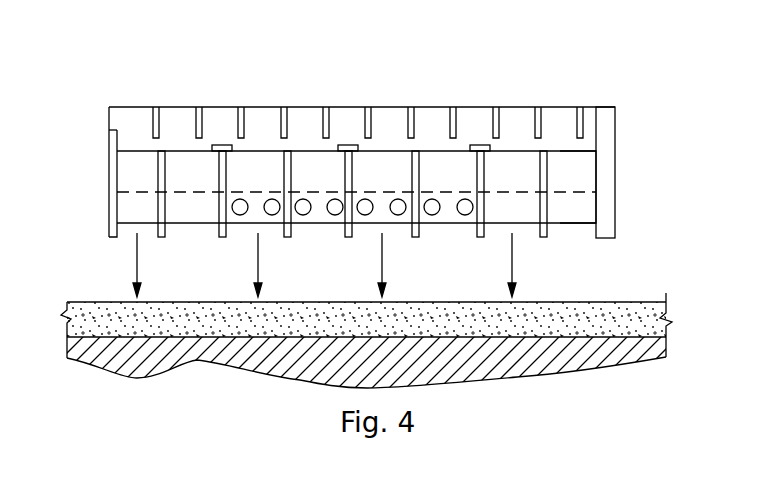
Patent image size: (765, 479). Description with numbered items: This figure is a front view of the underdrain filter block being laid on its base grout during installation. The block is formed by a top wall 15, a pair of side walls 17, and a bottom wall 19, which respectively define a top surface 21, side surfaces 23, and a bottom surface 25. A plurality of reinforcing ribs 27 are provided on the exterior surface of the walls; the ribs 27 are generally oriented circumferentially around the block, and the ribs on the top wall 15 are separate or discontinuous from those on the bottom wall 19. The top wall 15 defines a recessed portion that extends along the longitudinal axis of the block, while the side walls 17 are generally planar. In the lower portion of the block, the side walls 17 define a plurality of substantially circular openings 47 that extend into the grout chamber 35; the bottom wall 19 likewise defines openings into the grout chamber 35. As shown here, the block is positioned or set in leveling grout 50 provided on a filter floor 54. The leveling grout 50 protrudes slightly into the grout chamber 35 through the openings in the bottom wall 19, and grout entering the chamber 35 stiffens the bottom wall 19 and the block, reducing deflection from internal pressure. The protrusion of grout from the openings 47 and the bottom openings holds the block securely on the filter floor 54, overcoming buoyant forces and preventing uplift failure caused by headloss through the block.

The top wall 15 is at (217, 107).
The top surface 21 is at (389, 107).
The side walls 17 is at (560, 116).
The bottom wall 19 is at (573, 224).
The side surfaces 23 is at (585, 170).
The bottom surface 25 is at (130, 223).
The grout chamber 35 is at (137, 213).
The reinforcing ribs 27 is at (485, 170).
The openings 47 is at (240, 215).
The leveling grout 50 is at (668, 325).
The filter floor 54 is at (517, 375).